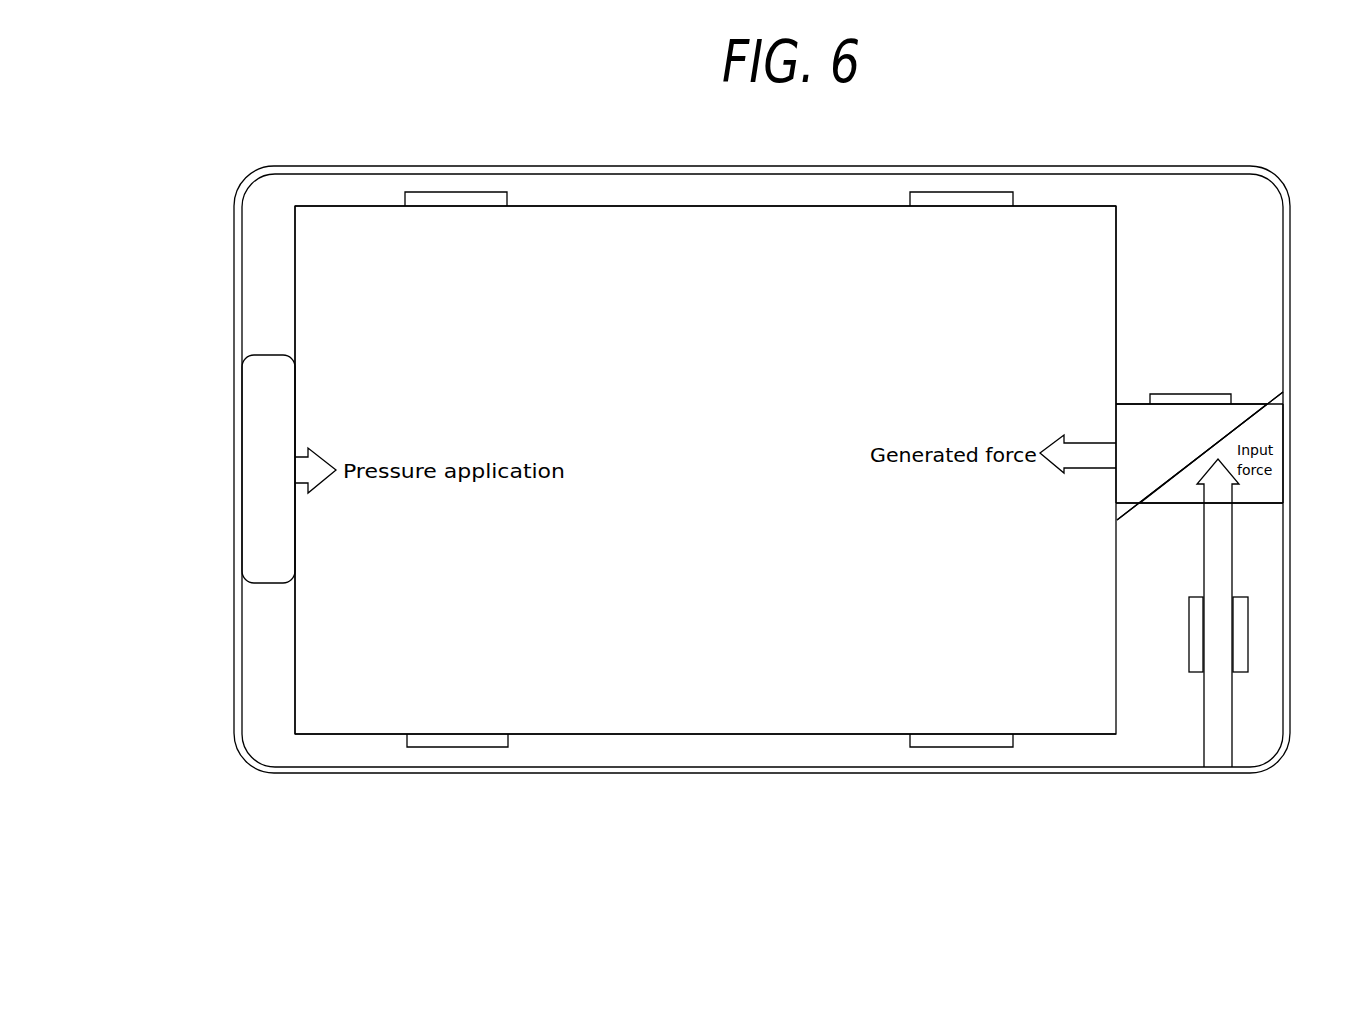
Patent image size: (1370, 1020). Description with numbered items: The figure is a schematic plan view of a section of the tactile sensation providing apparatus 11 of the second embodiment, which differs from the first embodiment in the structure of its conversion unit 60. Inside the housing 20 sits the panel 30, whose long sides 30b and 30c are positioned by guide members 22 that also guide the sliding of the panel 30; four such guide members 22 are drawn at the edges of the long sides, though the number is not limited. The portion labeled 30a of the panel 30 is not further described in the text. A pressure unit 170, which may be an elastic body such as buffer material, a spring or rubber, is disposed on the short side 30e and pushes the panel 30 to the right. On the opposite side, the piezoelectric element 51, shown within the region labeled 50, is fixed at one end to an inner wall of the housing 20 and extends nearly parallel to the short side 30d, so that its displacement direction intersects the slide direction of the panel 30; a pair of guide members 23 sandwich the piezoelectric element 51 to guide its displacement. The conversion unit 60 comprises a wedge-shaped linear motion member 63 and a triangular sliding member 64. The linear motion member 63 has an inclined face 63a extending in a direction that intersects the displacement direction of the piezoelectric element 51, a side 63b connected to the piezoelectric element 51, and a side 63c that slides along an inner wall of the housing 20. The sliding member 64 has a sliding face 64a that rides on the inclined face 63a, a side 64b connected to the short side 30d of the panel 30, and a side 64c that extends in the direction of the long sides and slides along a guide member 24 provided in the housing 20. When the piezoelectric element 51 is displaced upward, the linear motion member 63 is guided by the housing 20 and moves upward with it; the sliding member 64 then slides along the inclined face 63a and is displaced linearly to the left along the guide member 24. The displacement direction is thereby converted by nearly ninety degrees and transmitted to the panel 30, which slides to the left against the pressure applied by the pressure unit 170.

The tactile sensation providing apparatus 11 is at (1078, 150).
The housing 20 is at (242, 250).
The guide members 22 is at (455, 192).
The guide members 23 is at (1189, 630).
The guide member 24 is at (1198, 394).
The panel 30 is at (328, 278).
The side edge of panel 30a is at (318, 665).
The long side 30b is at (694, 206).
The long side 30c is at (704, 734).
The short side 30d is at (1116, 265).
The short side 30e is at (295, 625).
The actuator 50 is at (1228, 640).
The piezoelectric element 51 is at (1218, 740).
The conversion unit 60 is at (1184, 447).
The linear motion member 63 is at (1270, 435).
The inclined face 63a is at (1265, 402).
The side 63b is at (1178, 503).
The side 63c is at (1286, 468).
The sliding member 64 is at (1138, 432).
The sliding face 64a is at (1125, 520).
The side 64b is at (1116, 478).
The side 64c is at (1135, 404).
The pressure unit 170 is at (264, 474).